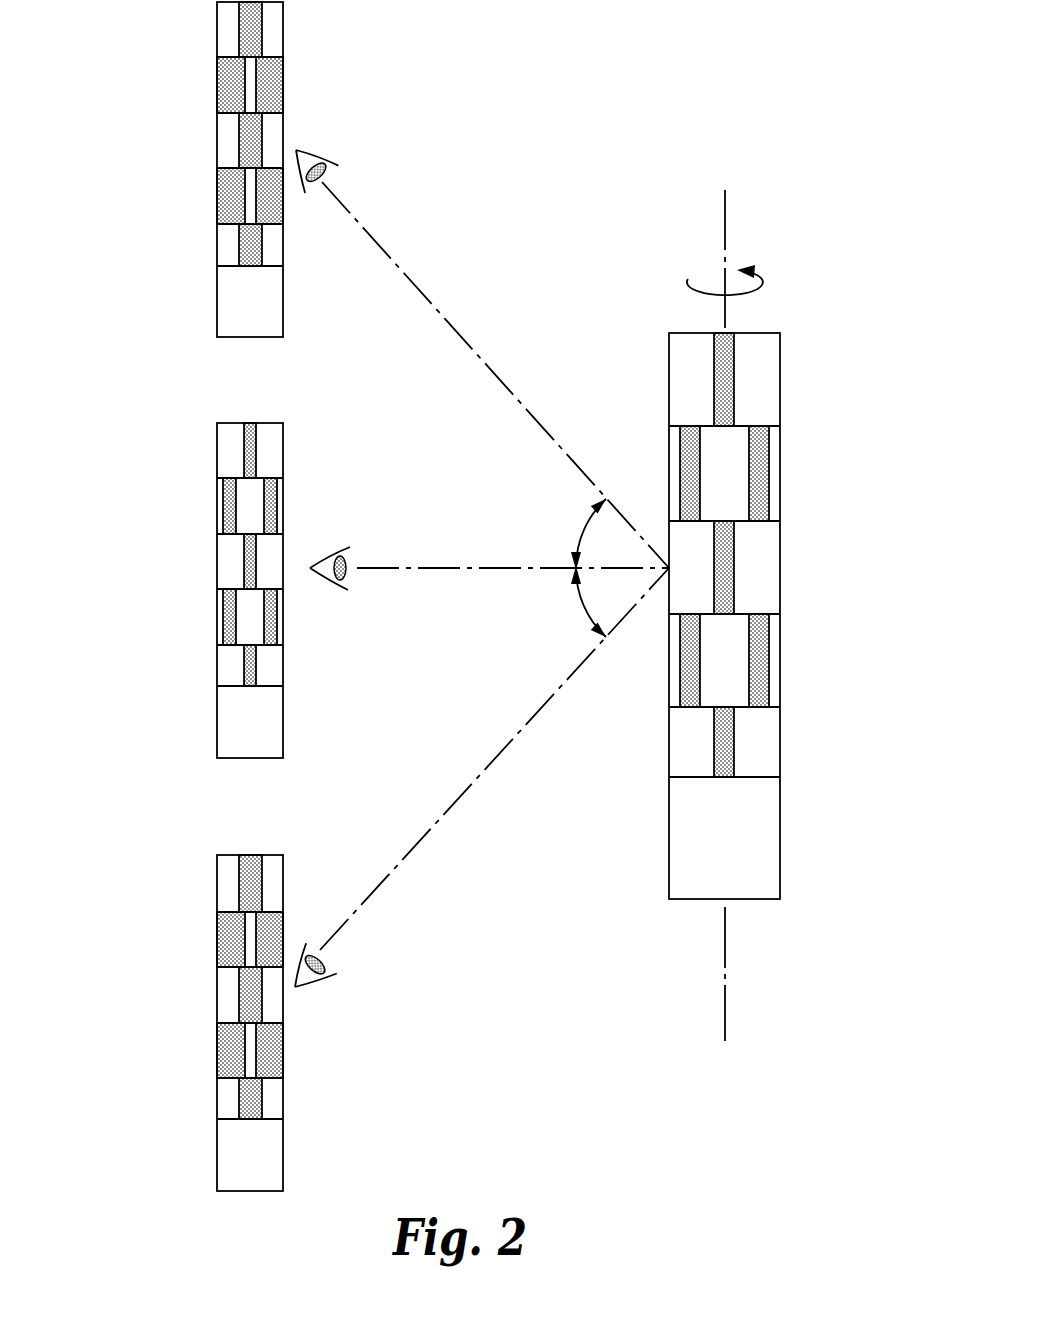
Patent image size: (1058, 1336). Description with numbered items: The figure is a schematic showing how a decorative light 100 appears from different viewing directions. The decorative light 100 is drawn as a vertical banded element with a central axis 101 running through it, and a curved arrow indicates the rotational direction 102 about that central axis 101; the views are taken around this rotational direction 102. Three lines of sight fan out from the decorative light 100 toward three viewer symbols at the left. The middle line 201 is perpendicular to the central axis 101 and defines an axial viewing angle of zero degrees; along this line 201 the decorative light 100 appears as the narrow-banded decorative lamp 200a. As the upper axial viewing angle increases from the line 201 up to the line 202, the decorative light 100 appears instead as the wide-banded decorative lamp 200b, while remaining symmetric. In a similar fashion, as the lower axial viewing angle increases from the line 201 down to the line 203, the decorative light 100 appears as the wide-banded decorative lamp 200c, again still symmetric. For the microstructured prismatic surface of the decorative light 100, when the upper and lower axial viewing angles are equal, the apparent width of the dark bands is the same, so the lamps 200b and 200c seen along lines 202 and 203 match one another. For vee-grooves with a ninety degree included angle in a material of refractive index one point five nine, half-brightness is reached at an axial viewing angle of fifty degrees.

The decorative light 100 is at (785, 318).
The central axis 101 is at (728, 213).
The rotational direction 102 is at (688, 280).
The narrow-banded decorative lamp 200a is at (190, 461).
The wide-banded decorative lamp 200b is at (190, 60).
The wide-banded decorative lamp 200c is at (190, 896).
The line 201 is at (448, 566).
The line 202 is at (460, 337).
The line 203 is at (460, 797).